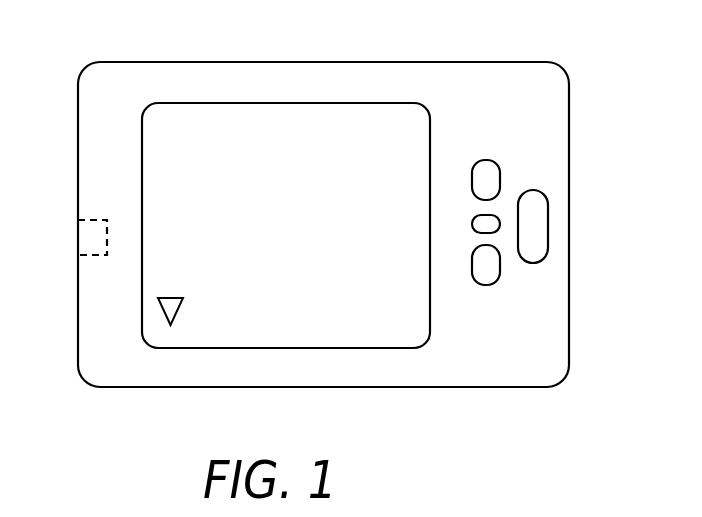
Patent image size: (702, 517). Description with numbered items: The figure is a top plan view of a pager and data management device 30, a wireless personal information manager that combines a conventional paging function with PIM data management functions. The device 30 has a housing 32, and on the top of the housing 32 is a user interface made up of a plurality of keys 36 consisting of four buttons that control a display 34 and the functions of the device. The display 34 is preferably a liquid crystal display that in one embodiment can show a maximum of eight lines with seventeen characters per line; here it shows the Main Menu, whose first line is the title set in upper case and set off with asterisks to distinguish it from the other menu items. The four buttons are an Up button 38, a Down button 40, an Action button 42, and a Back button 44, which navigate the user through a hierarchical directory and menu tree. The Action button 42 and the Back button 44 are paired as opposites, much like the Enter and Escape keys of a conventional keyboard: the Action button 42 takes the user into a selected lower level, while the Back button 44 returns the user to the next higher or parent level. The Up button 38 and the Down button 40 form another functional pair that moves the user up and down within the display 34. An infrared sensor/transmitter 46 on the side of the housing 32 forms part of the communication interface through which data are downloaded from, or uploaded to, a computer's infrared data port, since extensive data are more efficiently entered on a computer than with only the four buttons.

The pager and data management device 30 is at (567, 404).
The housing 32 is at (569, 122).
The display 34 is at (260, 103).
The keys 36 is at (512, 293).
The Up button 38 is at (485, 160).
The Down button 40 is at (472, 270).
The Action button 42 is at (472, 223).
The Back button 44 is at (548, 236).
The infrared sensor/transmitter 46 is at (78, 232).